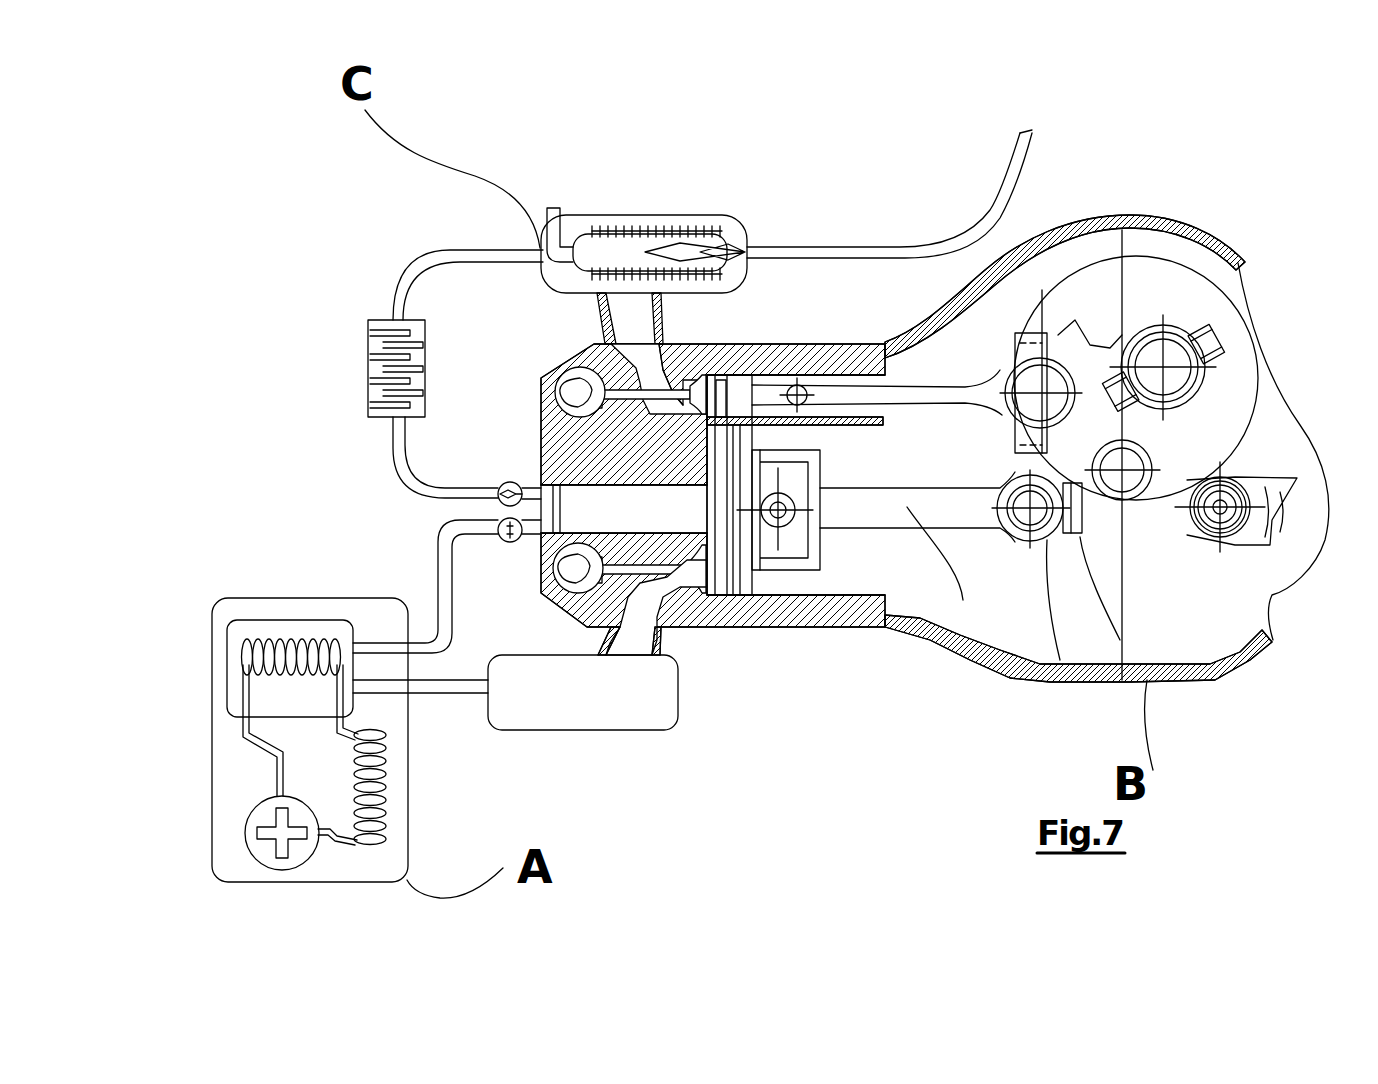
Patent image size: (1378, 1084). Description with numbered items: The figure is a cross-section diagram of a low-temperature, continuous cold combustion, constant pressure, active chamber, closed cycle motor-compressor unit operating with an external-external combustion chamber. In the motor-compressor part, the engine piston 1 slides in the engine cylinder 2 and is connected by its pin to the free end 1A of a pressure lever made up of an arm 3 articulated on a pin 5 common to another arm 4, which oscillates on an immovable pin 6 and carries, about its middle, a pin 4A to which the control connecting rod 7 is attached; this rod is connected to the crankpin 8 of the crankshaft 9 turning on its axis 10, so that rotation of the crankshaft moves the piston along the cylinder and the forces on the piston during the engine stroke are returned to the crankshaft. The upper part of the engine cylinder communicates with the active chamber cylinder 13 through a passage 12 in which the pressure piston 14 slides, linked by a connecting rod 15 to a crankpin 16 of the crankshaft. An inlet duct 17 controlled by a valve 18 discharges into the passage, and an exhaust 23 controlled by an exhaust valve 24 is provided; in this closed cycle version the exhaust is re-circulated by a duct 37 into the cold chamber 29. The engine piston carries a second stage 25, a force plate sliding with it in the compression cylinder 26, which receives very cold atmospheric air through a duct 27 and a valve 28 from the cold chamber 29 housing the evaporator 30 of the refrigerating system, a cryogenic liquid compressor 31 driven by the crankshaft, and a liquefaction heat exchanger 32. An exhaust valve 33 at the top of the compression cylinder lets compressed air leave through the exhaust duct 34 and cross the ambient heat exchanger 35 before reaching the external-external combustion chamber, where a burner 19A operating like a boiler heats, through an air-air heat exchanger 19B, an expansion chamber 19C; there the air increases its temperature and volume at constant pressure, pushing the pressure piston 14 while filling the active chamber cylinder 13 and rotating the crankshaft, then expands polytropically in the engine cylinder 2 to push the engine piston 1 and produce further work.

The engine piston 1 is at (728, 543).
The free end of pressure lever 1A is at (800, 580).
The engine cylinder 2 is at (847, 623).
The arm 3 is at (907, 507).
The arm 4 is at (1120, 667).
The pin 4A is at (1210, 662).
The pin 5 is at (1025, 545).
The immovable pin 6 is at (1273, 588).
The control connecting rod 7 is at (1180, 460).
The crankpin 8 is at (1170, 353).
The crankshaft 9 is at (1143, 310).
The axis 10 is at (1180, 450).
The passage 12 is at (768, 345).
The active chamber cylinder 13 is at (863, 340).
The pressure piston 14 is at (822, 345).
The connecting rod 15 is at (965, 317).
The crankpin 16 is at (1038, 385).
The inlet duct 17 is at (623, 333).
The valve 18 is at (637, 355).
The burner 19A is at (727, 235).
The air-air heat exchanger 19B is at (578, 228).
The expansion chamber 19C is at (600, 230).
The exhaust 23 is at (625, 640).
The exhaust valve 24 is at (578, 610).
The second stage 25 is at (608, 502).
The compression cylinder 26 is at (573, 450).
The duct 27 is at (437, 567).
The valve 28 is at (508, 540).
The cold chamber 29 is at (235, 675).
The evaporator 30 is at (292, 645).
The cryogenic liquid compressor 31 is at (248, 815).
The liquefaction heat exchanger 32 is at (385, 812).
The exhaust valve 33 is at (498, 494).
The exhaust duct 34 is at (397, 443).
The ambient heat exchanger 35 is at (397, 383).
The duct 37 is at (470, 687).